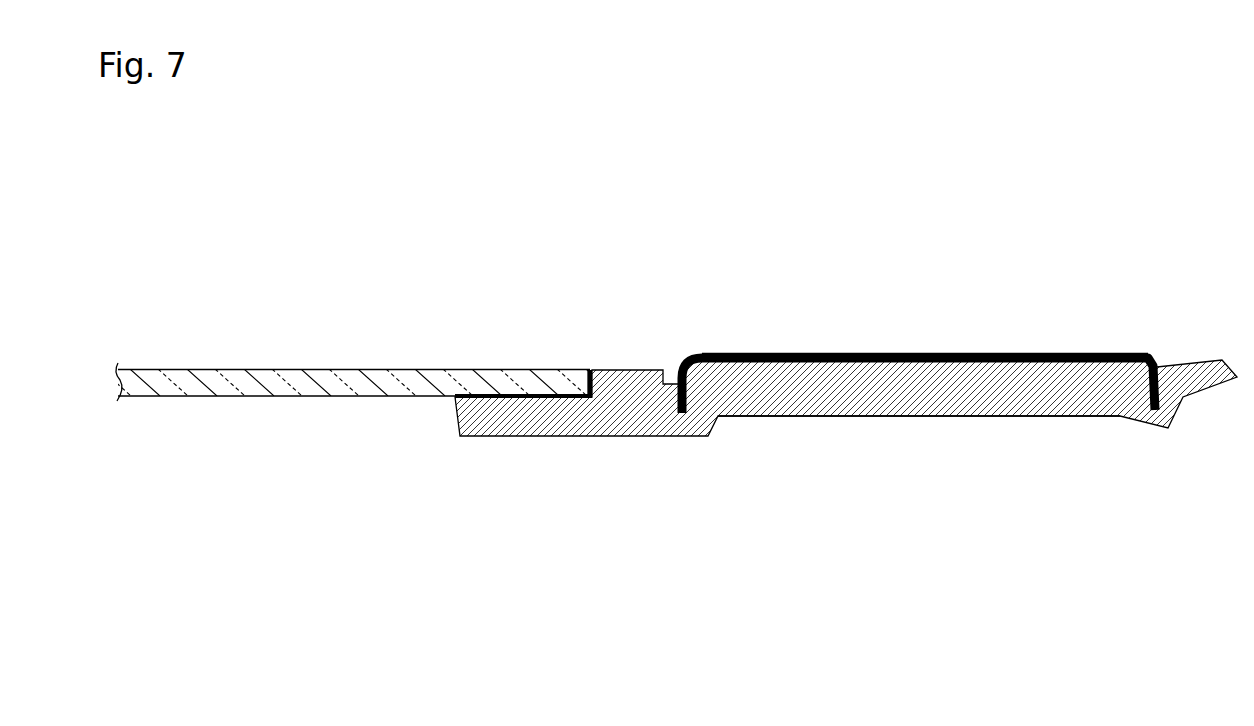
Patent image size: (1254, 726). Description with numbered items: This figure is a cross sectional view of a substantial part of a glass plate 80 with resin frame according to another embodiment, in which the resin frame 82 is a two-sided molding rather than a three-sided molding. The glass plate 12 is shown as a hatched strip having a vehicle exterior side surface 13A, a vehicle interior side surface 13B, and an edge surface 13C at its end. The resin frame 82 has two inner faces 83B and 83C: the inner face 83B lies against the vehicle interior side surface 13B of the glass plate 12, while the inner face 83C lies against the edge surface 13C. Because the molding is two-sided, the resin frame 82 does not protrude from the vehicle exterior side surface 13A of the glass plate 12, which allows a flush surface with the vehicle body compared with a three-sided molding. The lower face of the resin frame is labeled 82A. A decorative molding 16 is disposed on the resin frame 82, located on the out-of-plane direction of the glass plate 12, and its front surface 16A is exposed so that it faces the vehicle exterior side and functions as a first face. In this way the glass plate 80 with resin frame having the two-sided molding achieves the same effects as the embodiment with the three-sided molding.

The glass plate 12 is at (355, 404).
The vehicle exterior side surface 13A is at (290, 369).
The vehicle interior side surface 13B is at (323, 397).
The edge surface 13C is at (603, 380).
The inner face 83C is at (578, 381).
The inner face 83B is at (522, 393).
The glass plate with resin frame 80 is at (846, 339).
The resin frame 82 is at (846, 421).
The bottom surface of base body 82A is at (821, 401).
The decorative molding 16 is at (918, 353).
The front surface 16A is at (932, 352).